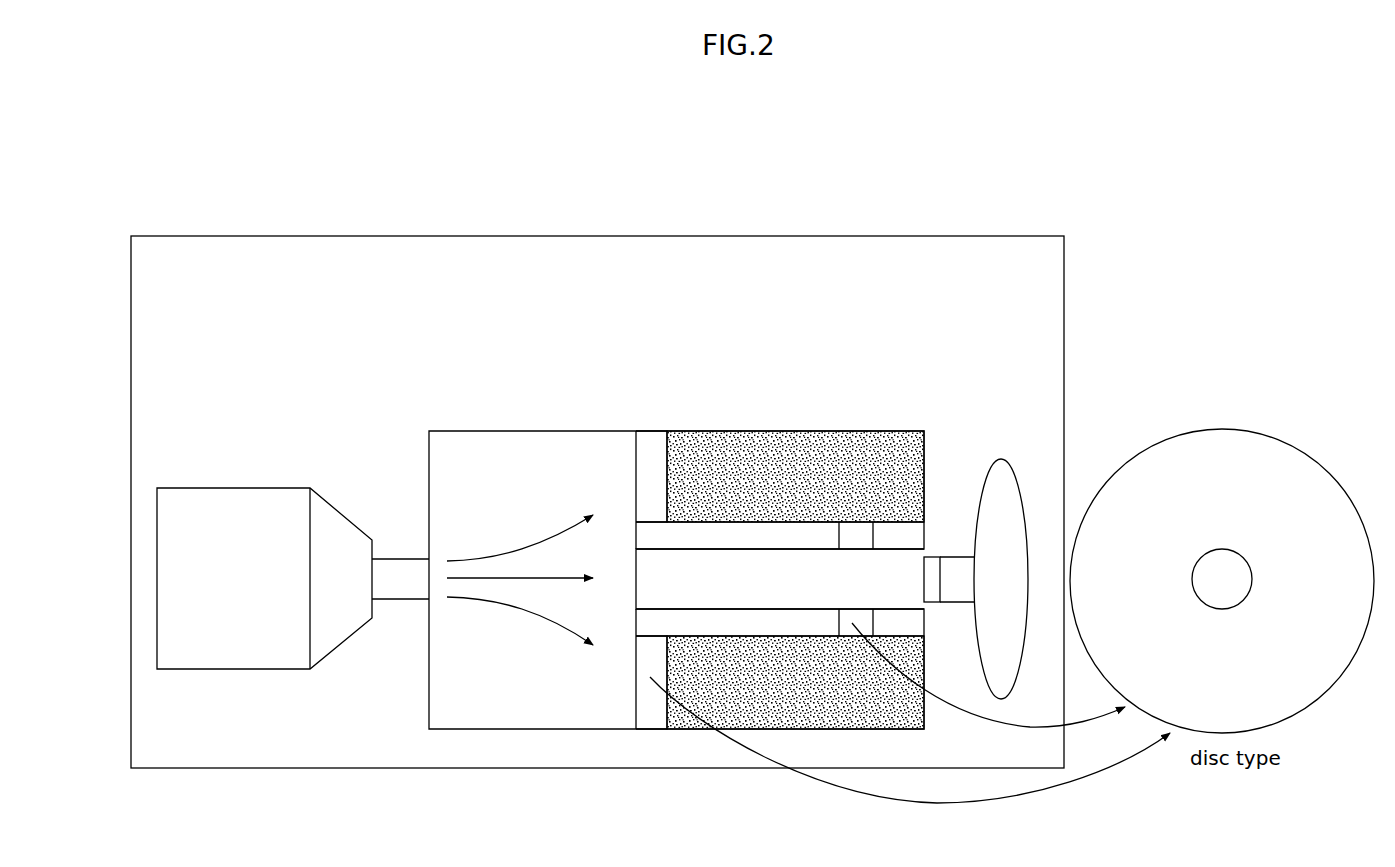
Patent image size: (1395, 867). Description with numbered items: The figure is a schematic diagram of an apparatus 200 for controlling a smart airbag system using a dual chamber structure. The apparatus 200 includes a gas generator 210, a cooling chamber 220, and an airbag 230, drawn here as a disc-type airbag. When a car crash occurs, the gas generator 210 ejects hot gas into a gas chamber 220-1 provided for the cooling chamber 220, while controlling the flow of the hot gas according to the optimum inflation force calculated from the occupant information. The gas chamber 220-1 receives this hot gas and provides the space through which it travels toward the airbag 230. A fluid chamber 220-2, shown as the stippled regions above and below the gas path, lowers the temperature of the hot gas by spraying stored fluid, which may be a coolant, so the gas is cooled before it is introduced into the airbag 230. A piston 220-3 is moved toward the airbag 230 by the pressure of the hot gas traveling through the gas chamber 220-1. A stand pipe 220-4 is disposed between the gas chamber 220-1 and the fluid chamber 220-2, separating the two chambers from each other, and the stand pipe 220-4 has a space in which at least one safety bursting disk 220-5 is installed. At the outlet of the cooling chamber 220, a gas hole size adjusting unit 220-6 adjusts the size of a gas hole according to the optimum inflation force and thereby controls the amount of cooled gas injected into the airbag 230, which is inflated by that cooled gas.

The apparatus for controlling a smart airbag system 200 is at (627, 232).
The gas generator 210 is at (220, 506).
The cooling chamber 220 is at (477, 428).
The gas chamber 220-1 is at (500, 655).
The fluid chamber 220-2 is at (708, 468).
The piston 220-3 is at (633, 473).
The stand pipe 220-4 is at (767, 545).
The safety bursting disk 220-5 is at (858, 540).
The gas hole size adjusting unit 220-6 is at (935, 565).
The airbag 230 is at (1012, 508).